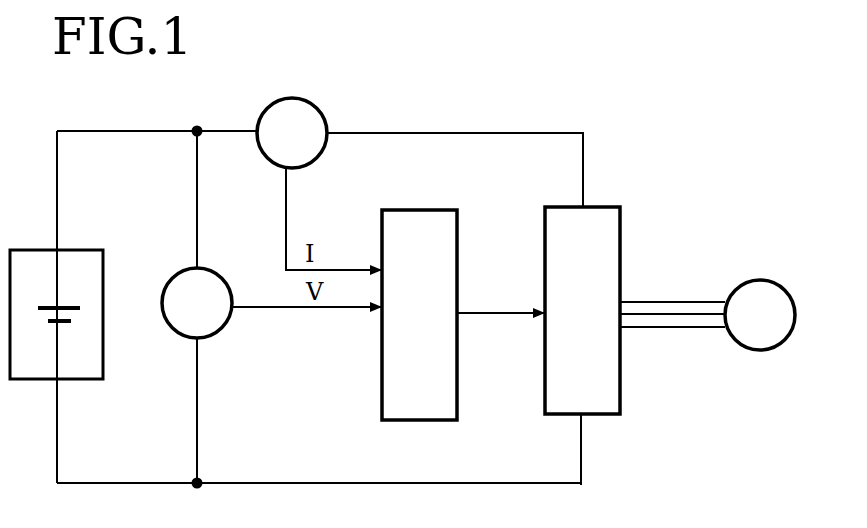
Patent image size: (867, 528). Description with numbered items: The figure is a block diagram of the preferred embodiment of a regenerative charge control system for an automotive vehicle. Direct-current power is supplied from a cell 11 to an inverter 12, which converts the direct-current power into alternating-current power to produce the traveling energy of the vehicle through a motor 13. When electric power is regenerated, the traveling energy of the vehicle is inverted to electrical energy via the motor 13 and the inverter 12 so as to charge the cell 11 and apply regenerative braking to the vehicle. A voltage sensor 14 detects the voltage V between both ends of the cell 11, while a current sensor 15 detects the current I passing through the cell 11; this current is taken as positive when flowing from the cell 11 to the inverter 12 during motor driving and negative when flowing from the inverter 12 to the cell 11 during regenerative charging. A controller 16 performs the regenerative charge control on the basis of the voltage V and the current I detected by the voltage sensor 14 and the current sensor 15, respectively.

The cell 11 is at (78, 250).
The inverter 12 is at (611, 207).
The motor 13 is at (760, 280).
The voltage sensor 14 is at (212, 271).
The current sensor 15 is at (301, 100).
The controller 16 is at (420, 210).